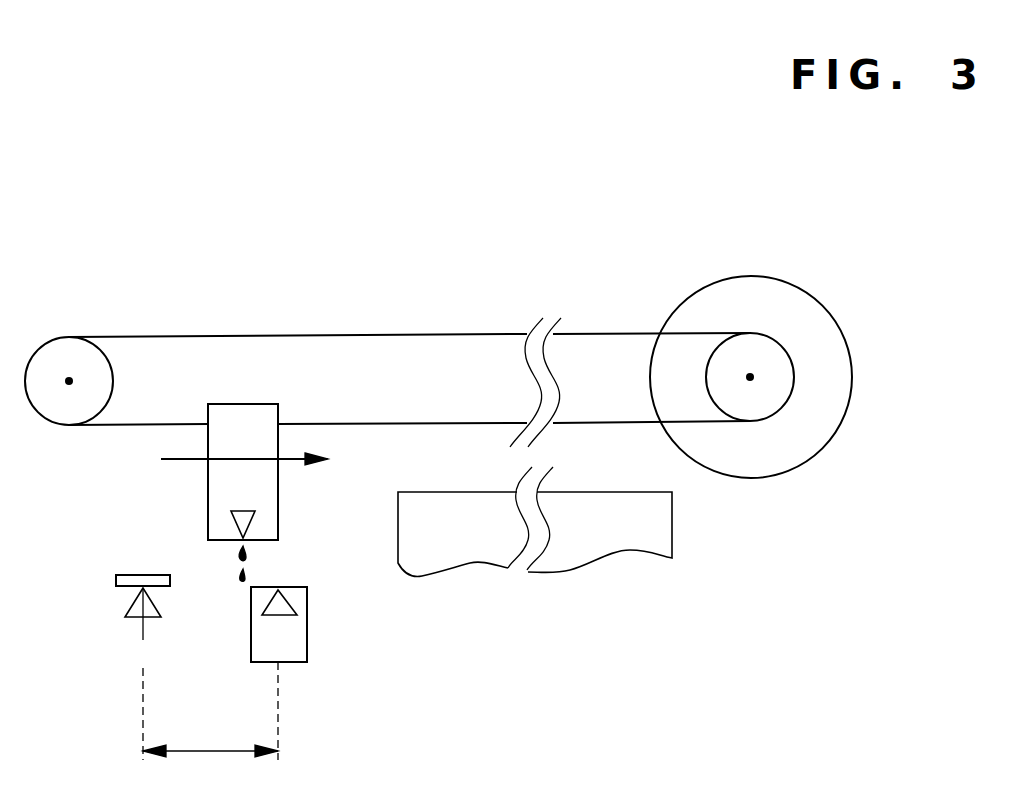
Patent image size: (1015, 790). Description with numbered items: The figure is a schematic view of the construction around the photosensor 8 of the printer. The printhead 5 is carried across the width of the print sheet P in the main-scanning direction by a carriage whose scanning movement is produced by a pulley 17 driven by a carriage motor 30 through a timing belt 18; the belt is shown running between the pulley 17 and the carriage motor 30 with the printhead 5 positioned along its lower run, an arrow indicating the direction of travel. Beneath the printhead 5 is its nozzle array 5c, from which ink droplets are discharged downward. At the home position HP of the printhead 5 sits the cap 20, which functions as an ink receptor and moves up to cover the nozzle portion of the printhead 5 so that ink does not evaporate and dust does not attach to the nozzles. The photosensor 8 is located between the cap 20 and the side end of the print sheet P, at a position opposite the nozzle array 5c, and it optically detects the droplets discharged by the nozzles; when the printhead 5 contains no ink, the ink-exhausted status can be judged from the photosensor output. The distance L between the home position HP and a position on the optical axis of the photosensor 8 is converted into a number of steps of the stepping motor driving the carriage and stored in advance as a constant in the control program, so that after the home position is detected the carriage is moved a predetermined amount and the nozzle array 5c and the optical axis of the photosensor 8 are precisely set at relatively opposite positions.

The pulley 17 is at (61, 336).
The timing belt 18 is at (450, 333).
The carriage motor 30 is at (803, 290).
The printhead 5 is at (233, 404).
The nozzle array 5c is at (256, 518).
The cap 20 is at (143, 573).
The photosensor 8 is at (273, 583).
The print sheet P is at (450, 491).
The home position HP is at (142, 702).
The distance L is at (210, 711).